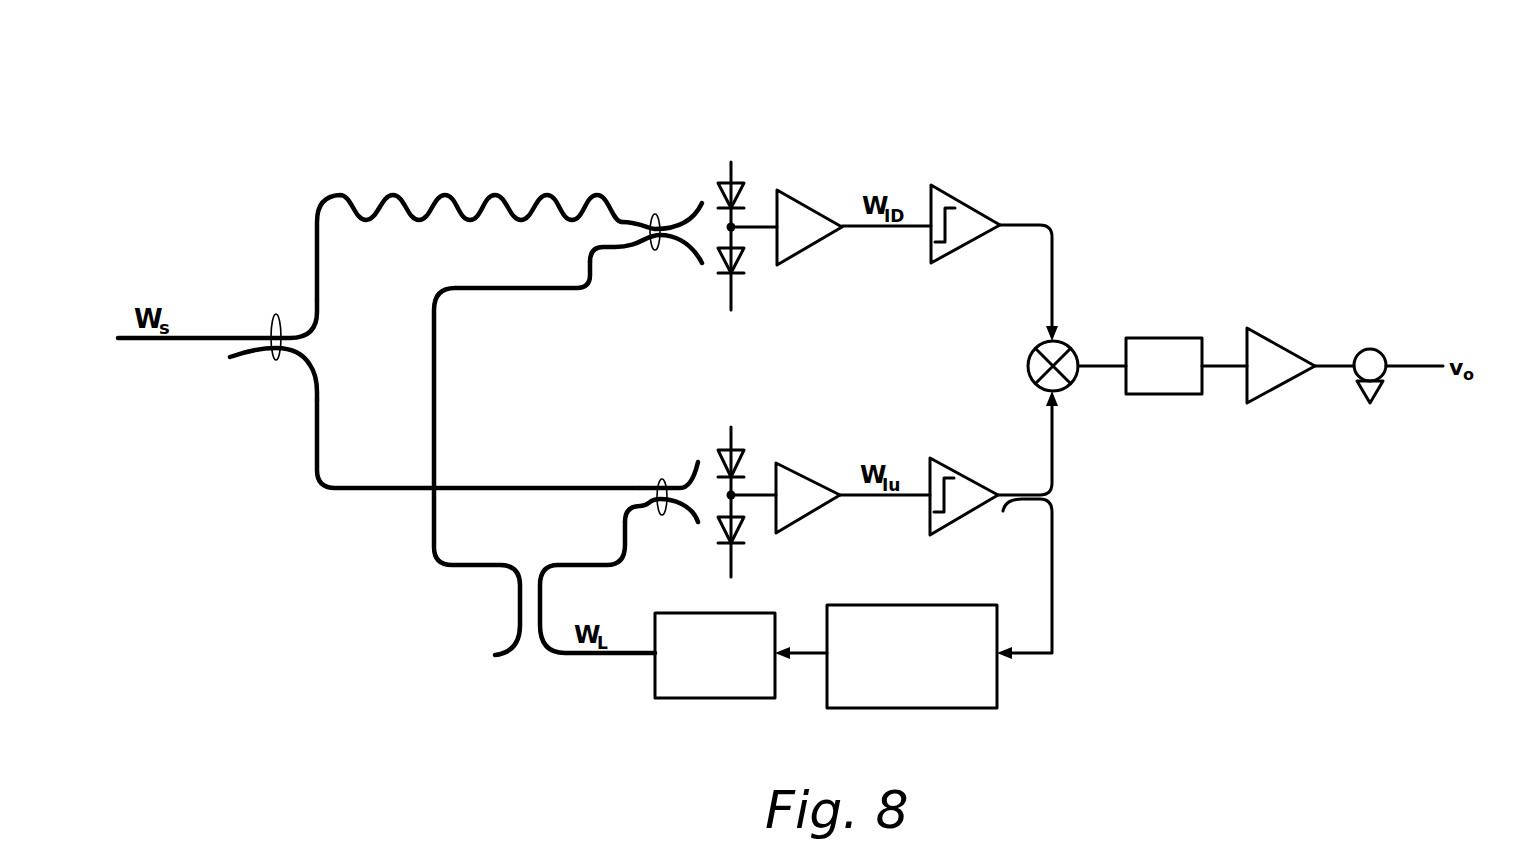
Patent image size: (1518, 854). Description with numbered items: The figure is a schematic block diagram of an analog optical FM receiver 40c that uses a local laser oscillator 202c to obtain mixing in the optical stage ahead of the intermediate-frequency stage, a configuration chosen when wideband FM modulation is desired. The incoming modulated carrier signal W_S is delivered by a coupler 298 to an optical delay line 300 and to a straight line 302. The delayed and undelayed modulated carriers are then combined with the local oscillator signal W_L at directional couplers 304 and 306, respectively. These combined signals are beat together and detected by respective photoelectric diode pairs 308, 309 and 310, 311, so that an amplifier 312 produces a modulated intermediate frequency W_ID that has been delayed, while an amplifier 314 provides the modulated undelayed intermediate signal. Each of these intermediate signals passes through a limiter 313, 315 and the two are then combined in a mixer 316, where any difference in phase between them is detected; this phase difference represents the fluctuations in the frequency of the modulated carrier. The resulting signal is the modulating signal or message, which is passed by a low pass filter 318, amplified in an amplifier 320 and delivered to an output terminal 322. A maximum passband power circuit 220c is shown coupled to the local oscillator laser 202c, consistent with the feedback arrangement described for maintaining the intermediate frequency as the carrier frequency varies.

The optical receiver system 40c is at (1210, 86).
The coupler 298 is at (276, 314).
The optical delay line 300 is at (500, 193).
The straight line 302 is at (503, 488).
The directional coupler 304 is at (656, 214).
The directional coupler 306 is at (662, 479).
The photoelectric diode 308 is at (745, 193).
The photoelectric diode 309 is at (744, 257).
The photoelectric diode 310 is at (743, 460).
The photoelectric diode 311 is at (742, 530).
The amplifier 312 is at (798, 200).
The limiter 313 is at (967, 207).
The amplifier 314 is at (787, 468).
The limiter 315 is at (933, 462).
The mixer 316 is at (1066, 340).
The low pass filter 318 is at (1163, 337).
The amplifier 320 is at (1277, 336).
The output terminal 322 is at (1381, 349).
The local oscillator laser 202c is at (678, 699).
The max passband power circuit 220c is at (955, 709).